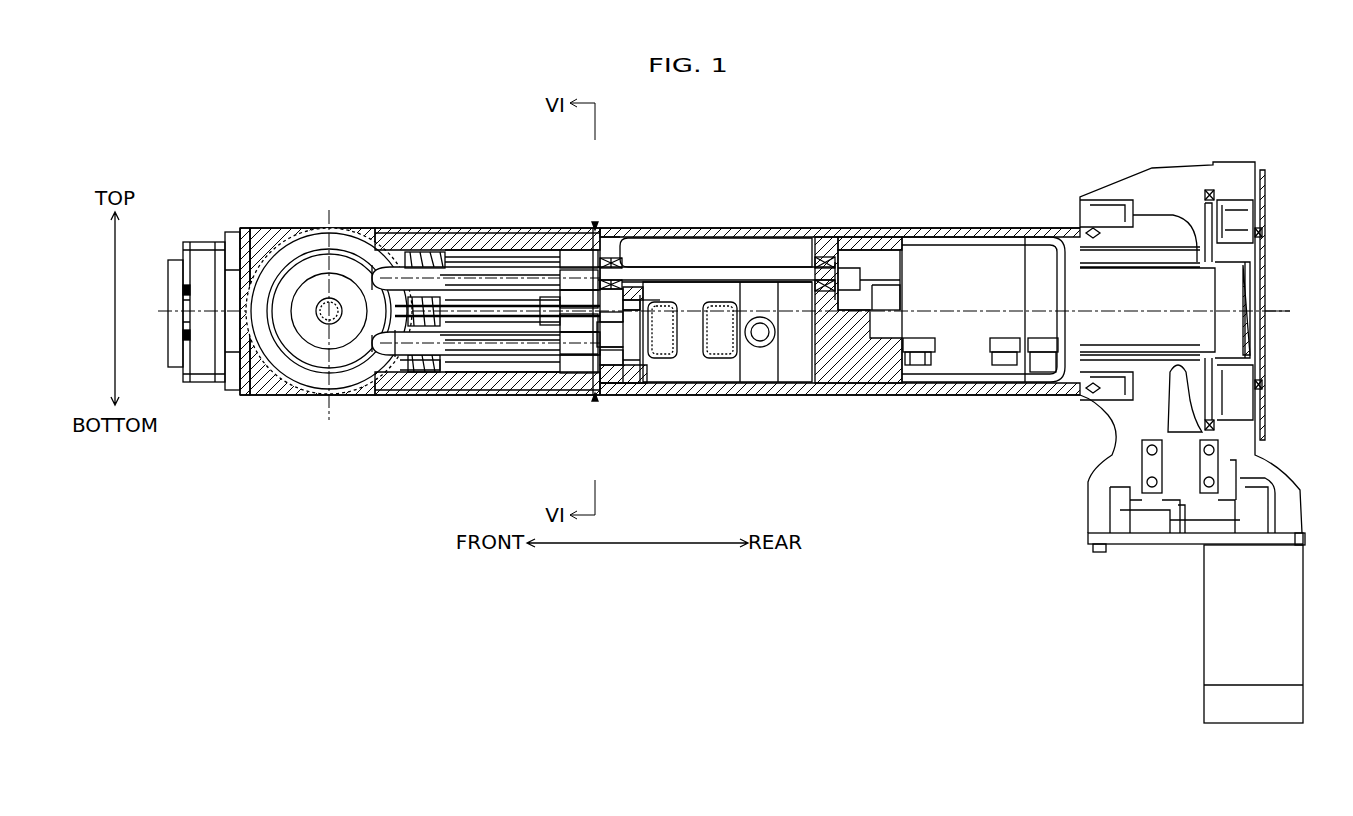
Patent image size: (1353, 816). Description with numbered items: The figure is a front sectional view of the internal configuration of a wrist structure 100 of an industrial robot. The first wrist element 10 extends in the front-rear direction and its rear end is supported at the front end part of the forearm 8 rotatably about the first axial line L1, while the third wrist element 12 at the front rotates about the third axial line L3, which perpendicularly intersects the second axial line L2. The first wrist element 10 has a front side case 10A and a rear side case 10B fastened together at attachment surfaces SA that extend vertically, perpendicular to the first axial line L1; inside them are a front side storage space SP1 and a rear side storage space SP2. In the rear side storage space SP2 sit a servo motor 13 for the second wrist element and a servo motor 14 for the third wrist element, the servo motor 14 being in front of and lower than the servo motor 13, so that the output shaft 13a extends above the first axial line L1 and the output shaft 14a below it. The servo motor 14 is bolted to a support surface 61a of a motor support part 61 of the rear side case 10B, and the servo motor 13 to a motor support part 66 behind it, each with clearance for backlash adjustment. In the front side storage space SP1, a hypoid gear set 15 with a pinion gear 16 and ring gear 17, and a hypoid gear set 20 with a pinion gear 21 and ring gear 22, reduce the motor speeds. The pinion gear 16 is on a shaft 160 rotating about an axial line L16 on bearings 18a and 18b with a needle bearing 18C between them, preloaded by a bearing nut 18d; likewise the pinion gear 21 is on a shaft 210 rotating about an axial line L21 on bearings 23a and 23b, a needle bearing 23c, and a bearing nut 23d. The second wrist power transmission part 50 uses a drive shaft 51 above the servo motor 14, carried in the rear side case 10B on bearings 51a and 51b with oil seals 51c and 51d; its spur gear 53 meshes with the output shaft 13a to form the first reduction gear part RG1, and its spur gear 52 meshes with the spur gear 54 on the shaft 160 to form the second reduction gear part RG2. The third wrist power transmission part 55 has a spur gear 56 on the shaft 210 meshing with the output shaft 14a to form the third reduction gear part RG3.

The forearm 8 is at (1192, 158).
The first wrist element 10 is at (1018, 220).
The front side case 10A is at (318, 228).
The rear side case 10B is at (1075, 226).
The third wrist element 12 is at (207, 392).
The servo motor 13 is at (970, 232).
The output shaft 13a is at (915, 232).
The servo motor 14 is at (722, 380).
The output shaft 14a is at (697, 396).
The hypoid gear set 15 is at (337, 175).
The pinion gear 16 is at (393, 236).
The ring gear 17 is at (343, 236).
The bearing 18a is at (424, 236).
The bearing 18b is at (528, 232).
The needle bearing 18C is at (463, 236).
The bearing nut 18d is at (553, 232).
The hypoid gear set 20 is at (420, 450).
The pinion gear 21 is at (408, 396).
The ring gear 22 is at (367, 396).
The bearing 23a is at (435, 396).
The bearing 23b is at (540, 396).
The needle bearing 23c is at (480, 396).
The bearing nut 23d is at (560, 396).
The second wrist power transmission part 50 is at (763, 225).
The drive shaft 51 is at (703, 232).
The bearing 51a is at (610, 235).
The bearing 51b is at (820, 232).
The oil seal 51c is at (642, 232).
The oil seal 51d is at (800, 232).
The spur gear 52 is at (578, 232).
The spur gear 53 is at (870, 232).
The spur gear 54 is at (590, 232).
The third wrist power transmission part 55 is at (590, 396).
The spur gear 56 is at (618, 396).
The motor support part 61 is at (667, 232).
The support surface 61a is at (672, 235).
The motor support part 66 is at (885, 396).
The wrist structure 100 is at (928, 158).
The shaft 160 is at (480, 232).
The shaft 210 is at (520, 396).
The first axial line L1 is at (1291, 311).
The second axial line L2 is at (306, 398).
The third axial line L3 is at (709, 311).
The axial line L16 is at (440, 232).
The axial line L21 is at (465, 396).
The front side storage space SP1 is at (552, 230).
The rear side storage space SP2 is at (737, 232).
The first reduction gear part RG1 is at (835, 226).
The second reduction gear part RG2 is at (605, 232).
The third reduction gear part RG3 is at (610, 396).
The attachment surfaces SA is at (595, 396).